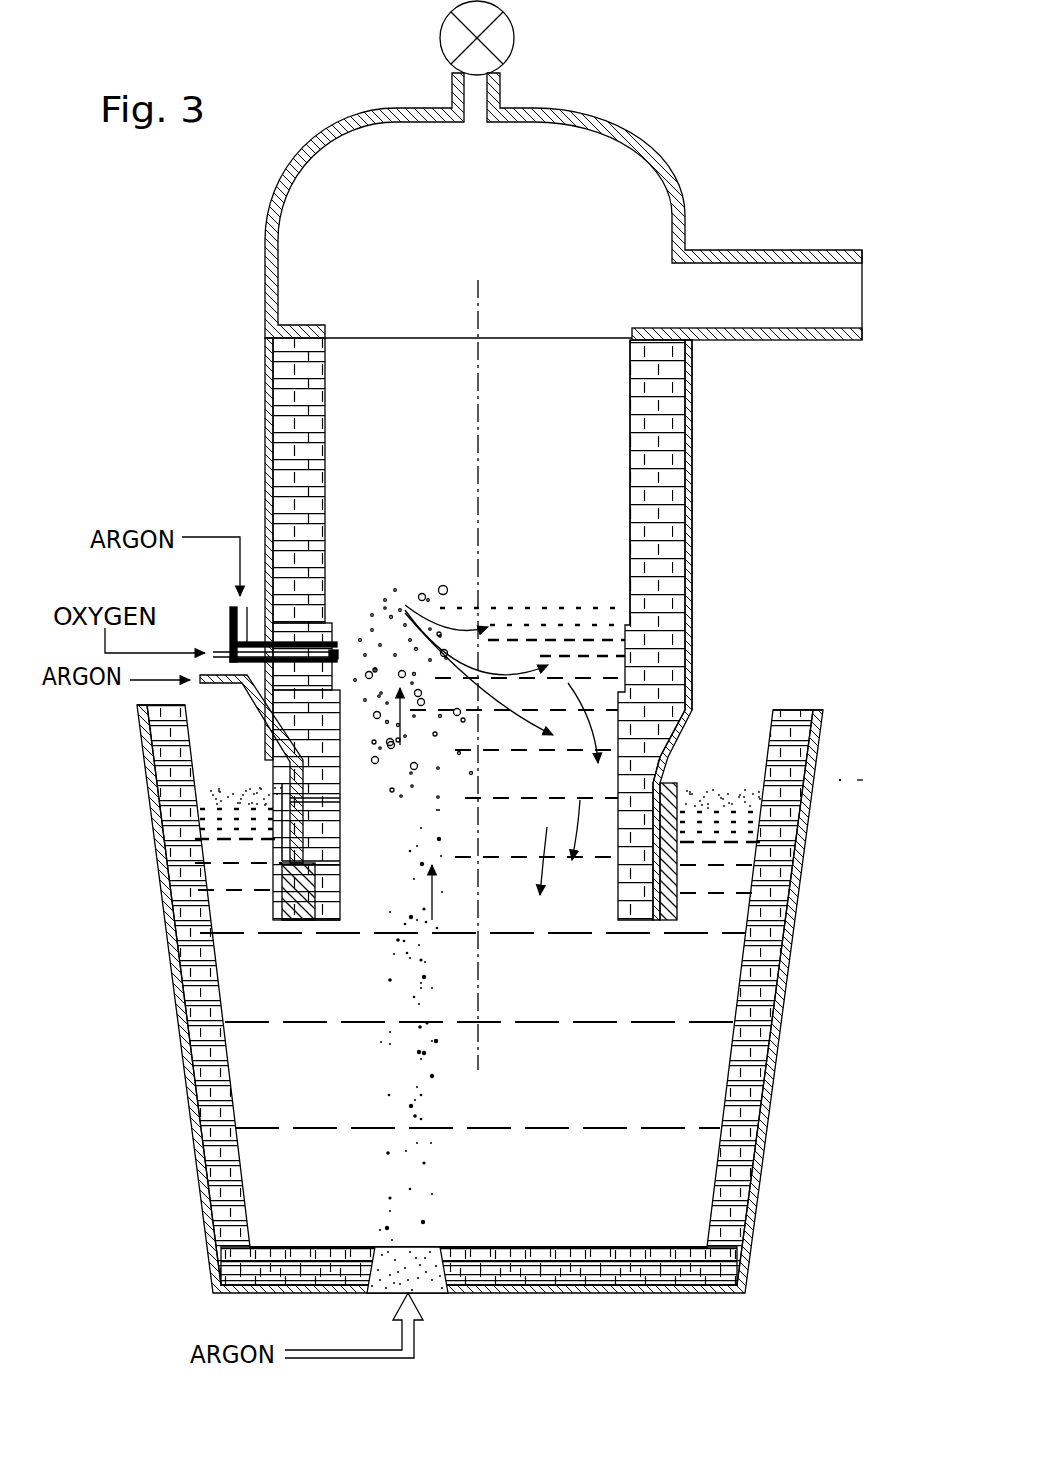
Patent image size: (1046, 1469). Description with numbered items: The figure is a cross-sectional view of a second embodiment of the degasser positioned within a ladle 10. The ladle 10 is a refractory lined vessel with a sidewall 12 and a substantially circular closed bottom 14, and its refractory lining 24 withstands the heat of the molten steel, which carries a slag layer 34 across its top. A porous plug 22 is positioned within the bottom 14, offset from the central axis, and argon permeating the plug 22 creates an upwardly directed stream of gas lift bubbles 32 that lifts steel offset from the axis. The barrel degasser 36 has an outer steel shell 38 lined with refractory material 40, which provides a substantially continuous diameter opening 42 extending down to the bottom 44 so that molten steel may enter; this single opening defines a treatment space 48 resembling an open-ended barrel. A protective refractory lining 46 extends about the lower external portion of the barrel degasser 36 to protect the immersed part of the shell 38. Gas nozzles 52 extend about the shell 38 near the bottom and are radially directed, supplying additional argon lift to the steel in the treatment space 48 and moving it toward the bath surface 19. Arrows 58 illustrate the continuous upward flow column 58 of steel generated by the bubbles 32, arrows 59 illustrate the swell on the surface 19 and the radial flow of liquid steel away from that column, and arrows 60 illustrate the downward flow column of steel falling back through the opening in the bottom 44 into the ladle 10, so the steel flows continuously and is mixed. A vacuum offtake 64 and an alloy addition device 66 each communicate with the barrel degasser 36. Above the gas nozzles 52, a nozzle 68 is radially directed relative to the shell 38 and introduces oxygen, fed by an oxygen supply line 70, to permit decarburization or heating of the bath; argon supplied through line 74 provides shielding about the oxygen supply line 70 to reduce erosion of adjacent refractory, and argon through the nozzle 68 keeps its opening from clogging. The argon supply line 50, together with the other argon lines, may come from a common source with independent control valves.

The ladle 10 is at (484, 1028).
The sidewall 12 is at (722, 1125).
The bottom 14 is at (530, 1292).
The bath surface 19 is at (405, 582).
The porous plug 22 is at (425, 1270).
The refractory lining 24 is at (545, 1263).
The gas lift bubbles 32 is at (390, 980).
The slag layer 34 is at (752, 795).
The barrel degasser 36 is at (700, 510).
The outer steel shell 38 is at (695, 640).
The refractory material 40 is at (640, 555).
The opening 42 is at (628, 440).
The bottom 44 is at (305, 925).
The protective refractory lining 46 is at (677, 822).
The treatment space 48 is at (558, 595).
The argon supply line 50 is at (222, 684).
The gas nozzles 52 is at (350, 800).
The upward flow column 58 is at (400, 730).
The radial flow arrows 59 is at (520, 695).
The downward flow column 60 is at (577, 808).
The vacuum offtake 64 is at (753, 282).
The alloy addition device 66 is at (503, 32).
The nozzle 68 is at (271, 600).
The oxygen supply line 70 is at (222, 648).
The argon line 74 is at (228, 615).